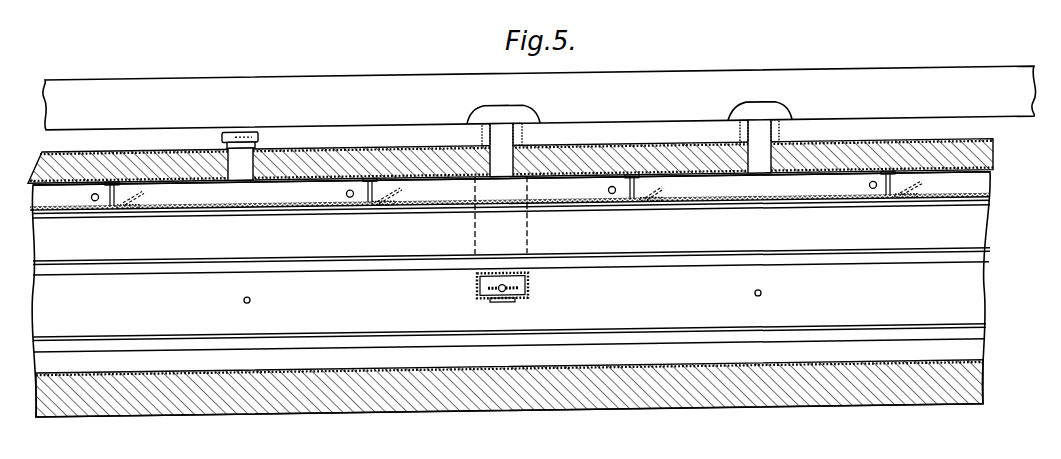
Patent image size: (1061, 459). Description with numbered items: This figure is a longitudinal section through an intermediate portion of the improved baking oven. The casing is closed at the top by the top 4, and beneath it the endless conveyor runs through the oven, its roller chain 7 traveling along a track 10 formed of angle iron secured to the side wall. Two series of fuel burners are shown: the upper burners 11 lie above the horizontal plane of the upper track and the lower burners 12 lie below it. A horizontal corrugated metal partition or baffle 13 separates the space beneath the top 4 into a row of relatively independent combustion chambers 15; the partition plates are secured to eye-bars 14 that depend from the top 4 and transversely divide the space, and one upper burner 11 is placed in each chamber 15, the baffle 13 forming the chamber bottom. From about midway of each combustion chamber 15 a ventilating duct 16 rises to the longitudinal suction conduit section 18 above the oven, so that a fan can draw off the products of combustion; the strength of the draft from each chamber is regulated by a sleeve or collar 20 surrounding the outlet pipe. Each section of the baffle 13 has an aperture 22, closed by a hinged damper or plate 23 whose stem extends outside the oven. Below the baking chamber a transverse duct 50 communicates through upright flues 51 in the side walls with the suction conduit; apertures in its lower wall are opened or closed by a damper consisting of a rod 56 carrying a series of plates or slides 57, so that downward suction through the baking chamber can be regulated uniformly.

The top 4 is at (993, 168).
The roller chain 7 is at (359, 268).
The track 10 is at (348, 341).
The upper series fuel burners 11 is at (349, 202).
The lower series fuel burners 12 is at (251, 303).
The horizontal metal partition 13 is at (268, 210).
The eye-bar 14 is at (885, 210).
The combustion chamber 15 is at (511, 188).
The ventilating duct 16 is at (497, 141).
The conduit section 18 is at (539, 98).
The sleeve or collar 20 is at (232, 137).
The aperture 22 is at (655, 212).
The hinged damper or plate 23 is at (135, 210).
The transverse duct 50 is at (529, 290).
The upright flue 51 is at (528, 237).
The damper rod 56 is at (477, 289).
The damper plate or slide 57 is at (500, 308).